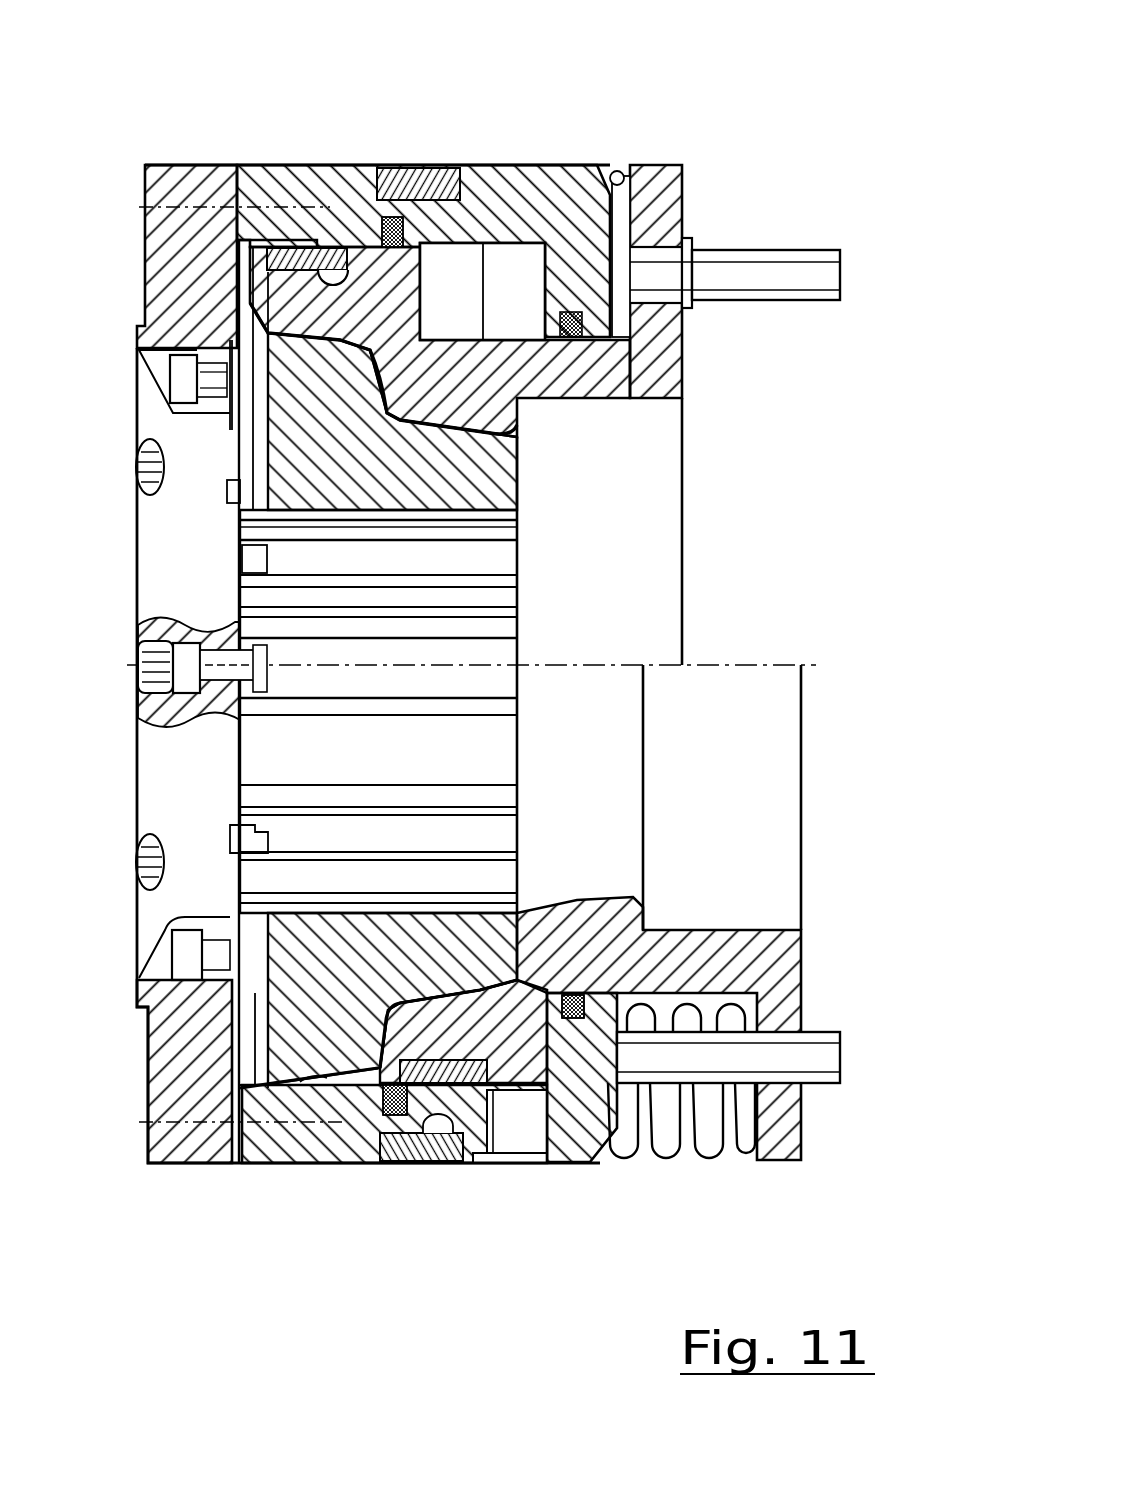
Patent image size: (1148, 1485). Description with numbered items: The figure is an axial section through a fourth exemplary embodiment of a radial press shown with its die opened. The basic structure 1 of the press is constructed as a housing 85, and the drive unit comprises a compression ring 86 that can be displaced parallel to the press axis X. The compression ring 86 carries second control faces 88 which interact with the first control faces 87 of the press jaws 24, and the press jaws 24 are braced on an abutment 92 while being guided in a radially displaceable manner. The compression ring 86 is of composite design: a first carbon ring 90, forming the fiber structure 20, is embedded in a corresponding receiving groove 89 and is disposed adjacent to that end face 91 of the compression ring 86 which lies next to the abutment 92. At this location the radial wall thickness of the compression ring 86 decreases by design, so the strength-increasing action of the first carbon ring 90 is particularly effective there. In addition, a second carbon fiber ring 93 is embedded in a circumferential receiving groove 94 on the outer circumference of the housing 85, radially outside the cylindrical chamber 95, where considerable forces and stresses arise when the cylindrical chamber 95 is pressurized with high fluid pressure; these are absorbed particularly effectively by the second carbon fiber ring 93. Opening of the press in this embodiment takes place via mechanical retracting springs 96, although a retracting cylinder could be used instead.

The basic structure 1 is at (290, 1200).
The fiber structure 20 is at (273, 232).
The press jaws 24 is at (345, 1028).
The housing 85 is at (243, 1167).
The compression ring 86 is at (457, 367).
The first control faces 87 is at (480, 1000).
The second control faces 88 is at (431, 985).
The receiving groove 89 is at (362, 290).
The first carbon ring 90 is at (300, 248).
The end face 91 is at (238, 265).
The abutment 92 is at (232, 1042).
The second carbon fiber ring 93 is at (407, 166).
The circumferential receiving groove 94 is at (448, 1138).
The cylindrical chamber 95 is at (442, 273).
The mechanical retracting springs 96 is at (672, 1142).
The press axis X is at (557, 665).